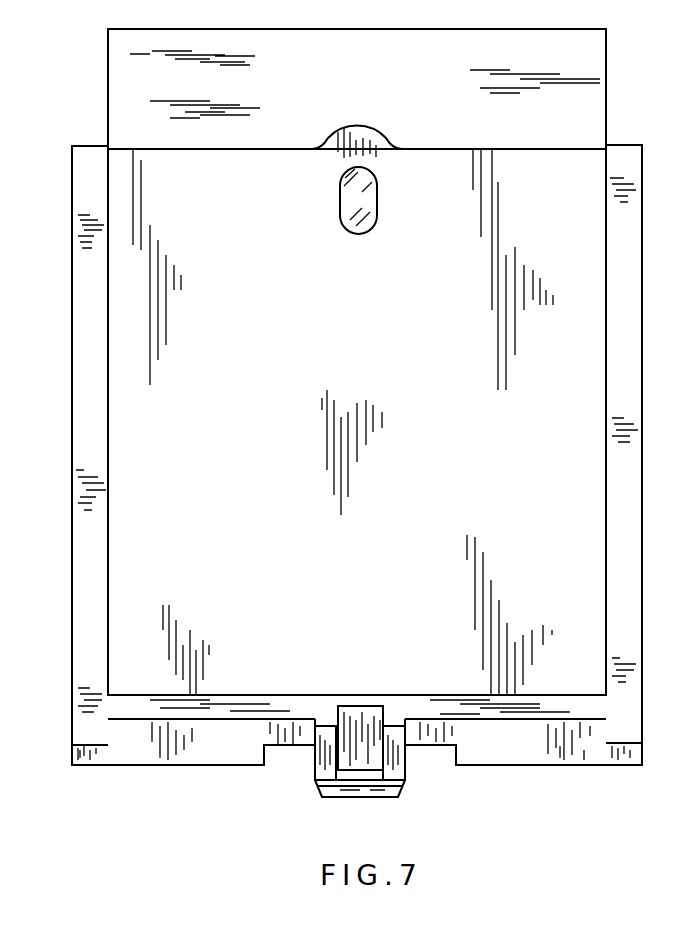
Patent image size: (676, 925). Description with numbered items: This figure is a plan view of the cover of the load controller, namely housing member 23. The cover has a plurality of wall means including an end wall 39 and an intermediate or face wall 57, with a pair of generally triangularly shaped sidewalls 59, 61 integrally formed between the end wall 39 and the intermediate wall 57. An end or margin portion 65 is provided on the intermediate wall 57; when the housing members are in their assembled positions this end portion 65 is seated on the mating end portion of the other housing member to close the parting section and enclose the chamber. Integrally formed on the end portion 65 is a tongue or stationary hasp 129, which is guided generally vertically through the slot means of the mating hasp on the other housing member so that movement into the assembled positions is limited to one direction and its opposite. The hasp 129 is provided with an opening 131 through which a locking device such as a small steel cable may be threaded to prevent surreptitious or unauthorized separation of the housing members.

The housing member 23 is at (618, 101).
The end wall 39 is at (376, 90).
The intermediate wall 57 is at (399, 365).
The sidewall 59 is at (607, 300).
The sidewall 61 is at (108, 315).
The end portion 65 is at (513, 748).
The stationary hasp 129 is at (388, 778).
The opening 131 is at (345, 758).